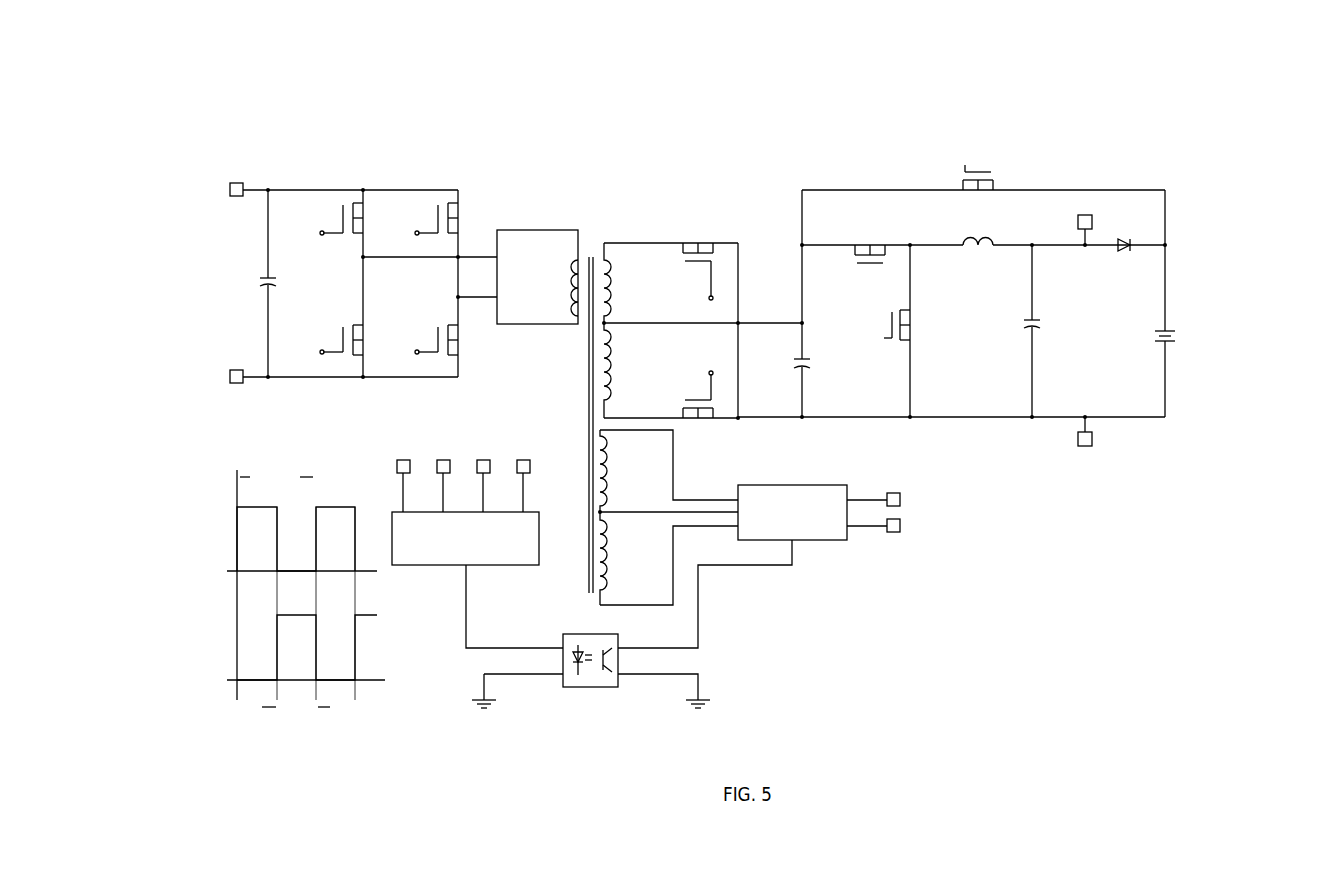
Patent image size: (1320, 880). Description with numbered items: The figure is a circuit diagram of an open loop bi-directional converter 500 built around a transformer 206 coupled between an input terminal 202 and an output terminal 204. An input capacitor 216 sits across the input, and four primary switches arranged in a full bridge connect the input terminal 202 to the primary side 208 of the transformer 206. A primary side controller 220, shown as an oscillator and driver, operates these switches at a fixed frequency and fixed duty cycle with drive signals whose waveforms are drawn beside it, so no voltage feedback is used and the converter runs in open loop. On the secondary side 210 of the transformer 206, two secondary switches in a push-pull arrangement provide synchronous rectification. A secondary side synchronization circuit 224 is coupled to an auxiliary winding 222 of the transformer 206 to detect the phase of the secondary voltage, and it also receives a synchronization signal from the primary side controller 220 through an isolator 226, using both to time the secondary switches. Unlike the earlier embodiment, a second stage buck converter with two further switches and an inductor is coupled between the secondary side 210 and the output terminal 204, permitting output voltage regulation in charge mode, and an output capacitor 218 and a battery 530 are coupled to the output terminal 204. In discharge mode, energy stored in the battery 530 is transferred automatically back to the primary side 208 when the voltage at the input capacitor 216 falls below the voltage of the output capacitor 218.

The open loop bi-directional converter 500 is at (940, 112).
The input terminal 202 is at (235, 180).
The input capacitor 216 is at (240, 286).
The primary side 208 is at (538, 229).
The transformer 206 is at (600, 228).
The secondary side 210 is at (639, 245).
The output terminal 204 is at (1085, 228).
The output capacitor 218 is at (1018, 327).
The battery 530 is at (1180, 350).
The auxiliary winding 222 is at (617, 500).
The primary side controller 220 is at (443, 561).
The secondary side synchronization circuit 224 is at (826, 548).
The isolator 226 is at (580, 685).